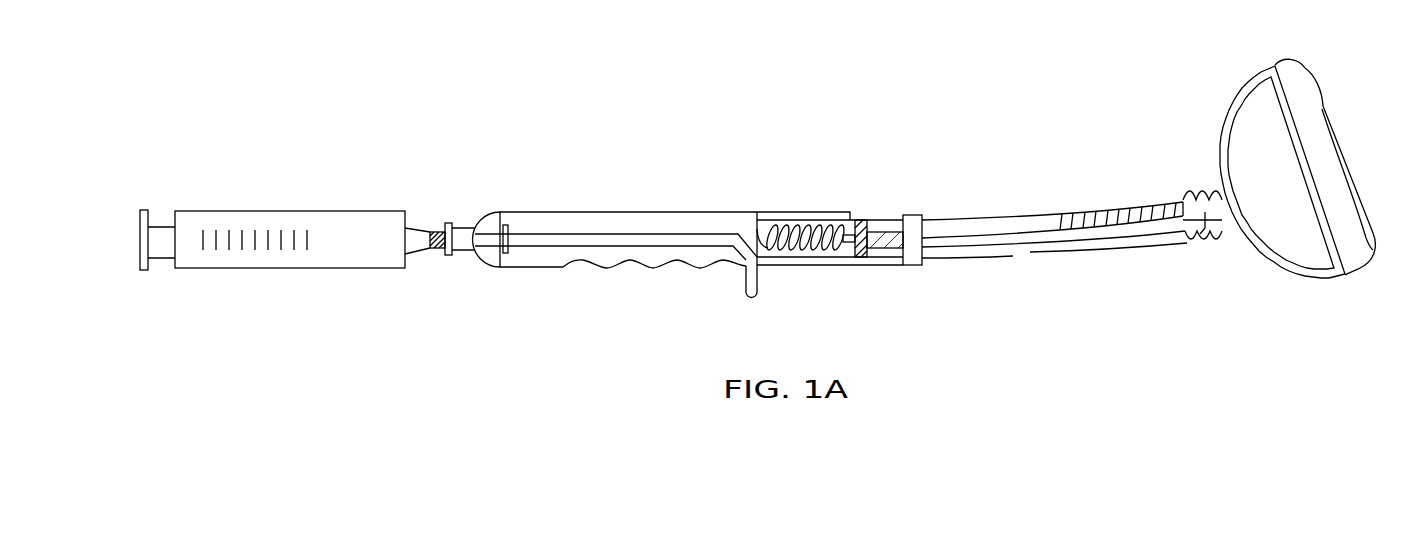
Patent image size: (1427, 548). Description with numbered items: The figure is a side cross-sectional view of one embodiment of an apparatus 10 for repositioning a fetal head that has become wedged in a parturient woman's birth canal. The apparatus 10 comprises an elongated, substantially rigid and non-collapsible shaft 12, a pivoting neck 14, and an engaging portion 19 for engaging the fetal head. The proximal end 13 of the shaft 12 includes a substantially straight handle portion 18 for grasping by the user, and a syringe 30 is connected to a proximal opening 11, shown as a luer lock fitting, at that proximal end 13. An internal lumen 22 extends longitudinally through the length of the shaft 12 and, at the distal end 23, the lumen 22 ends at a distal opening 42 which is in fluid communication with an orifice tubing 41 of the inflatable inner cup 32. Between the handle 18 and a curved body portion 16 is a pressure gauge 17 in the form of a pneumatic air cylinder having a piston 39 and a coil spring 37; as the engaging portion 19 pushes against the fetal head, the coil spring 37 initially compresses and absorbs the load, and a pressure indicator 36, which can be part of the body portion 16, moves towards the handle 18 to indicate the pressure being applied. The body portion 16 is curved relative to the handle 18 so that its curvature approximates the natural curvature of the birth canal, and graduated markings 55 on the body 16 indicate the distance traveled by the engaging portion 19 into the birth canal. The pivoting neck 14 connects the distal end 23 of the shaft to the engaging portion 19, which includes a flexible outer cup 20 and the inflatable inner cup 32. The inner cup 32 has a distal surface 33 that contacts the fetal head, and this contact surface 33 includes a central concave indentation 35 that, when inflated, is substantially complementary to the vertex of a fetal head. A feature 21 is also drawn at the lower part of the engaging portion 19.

The apparatus 10 is at (728, 100).
The proximal opening 11 is at (460, 254).
The shaft 12 is at (1020, 147).
The proximal end 13 is at (493, 190).
The pivoting neck 14 is at (1198, 188).
The curved body portion 16 is at (983, 219).
The pressure gauge 17 is at (840, 211).
The handle portion 18 is at (627, 222).
The engaging portion 19 is at (1215, 80).
The outer cup 20 is at (1250, 80).
The lower protrusion 21 is at (1366, 268).
The lumen 22 is at (550, 247).
The distal end 23 is at (1140, 272).
The syringe 30 is at (256, 234).
The inflatable inner cup 32 is at (1296, 82).
The distal surface 33 is at (1322, 82).
The central concave indentation 35 is at (1336, 158).
The pressure indicator 36 is at (910, 214).
The coil spring 37 is at (780, 222).
The piston 39 is at (878, 250).
The orifice tubing 41 is at (1204, 228).
The distal opening 42 is at (1174, 203).
The graduated markings 55 is at (1102, 207).